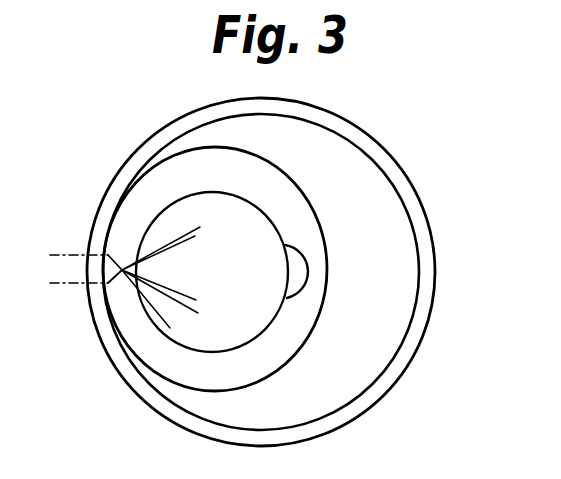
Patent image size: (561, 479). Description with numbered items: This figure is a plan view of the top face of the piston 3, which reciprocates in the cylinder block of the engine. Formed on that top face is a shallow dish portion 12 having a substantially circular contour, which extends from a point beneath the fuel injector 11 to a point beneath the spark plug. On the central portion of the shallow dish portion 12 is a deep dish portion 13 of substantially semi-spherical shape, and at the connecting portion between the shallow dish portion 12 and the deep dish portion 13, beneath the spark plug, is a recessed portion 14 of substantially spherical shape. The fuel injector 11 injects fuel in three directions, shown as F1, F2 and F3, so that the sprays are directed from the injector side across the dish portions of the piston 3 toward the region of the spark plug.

The piston 3 is at (422, 208).
The fuel injector 11 is at (62, 255).
The shallow dish portion 12 is at (190, 377).
The deep dish portion 13 is at (165, 308).
The recessed portion 14 is at (305, 266).
The fuel injection direction F1 is at (171, 328).
The fuel injection direction F2 is at (195, 300).
The fuel injection direction F3 is at (196, 231).